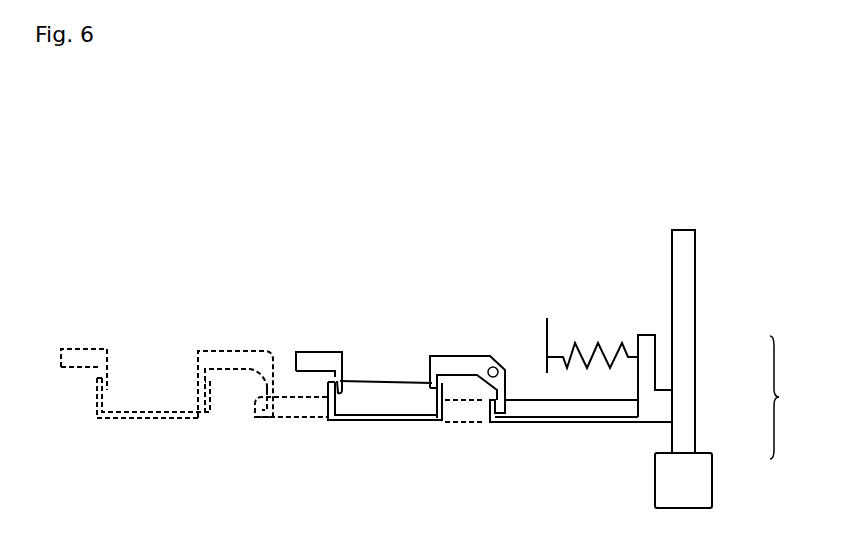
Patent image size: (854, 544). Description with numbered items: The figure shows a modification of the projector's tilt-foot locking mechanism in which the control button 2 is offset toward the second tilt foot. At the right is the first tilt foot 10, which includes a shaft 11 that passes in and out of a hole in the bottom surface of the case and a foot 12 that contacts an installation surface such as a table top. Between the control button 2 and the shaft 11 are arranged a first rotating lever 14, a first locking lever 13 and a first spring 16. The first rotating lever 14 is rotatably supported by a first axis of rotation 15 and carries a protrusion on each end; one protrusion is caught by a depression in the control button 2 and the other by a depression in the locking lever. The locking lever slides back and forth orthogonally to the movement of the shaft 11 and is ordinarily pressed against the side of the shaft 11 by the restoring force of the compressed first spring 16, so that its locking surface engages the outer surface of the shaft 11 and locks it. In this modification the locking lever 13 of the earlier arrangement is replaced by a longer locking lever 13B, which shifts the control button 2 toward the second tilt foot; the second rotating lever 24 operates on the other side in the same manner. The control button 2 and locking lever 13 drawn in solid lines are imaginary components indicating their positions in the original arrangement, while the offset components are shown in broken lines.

The control button 2 is at (137, 414).
The first tilt foot 10 is at (802, 397).
The shaft 11 is at (690, 394).
The foot 12 is at (706, 478).
The first locking lever 13 is at (590, 422).
The longer locking lever 13B is at (297, 417).
The first rotating lever 14 is at (216, 353).
The first axis of rotation 15 is at (267, 356).
The first spring 16 is at (586, 350).
The second rotating lever 24 is at (90, 356).